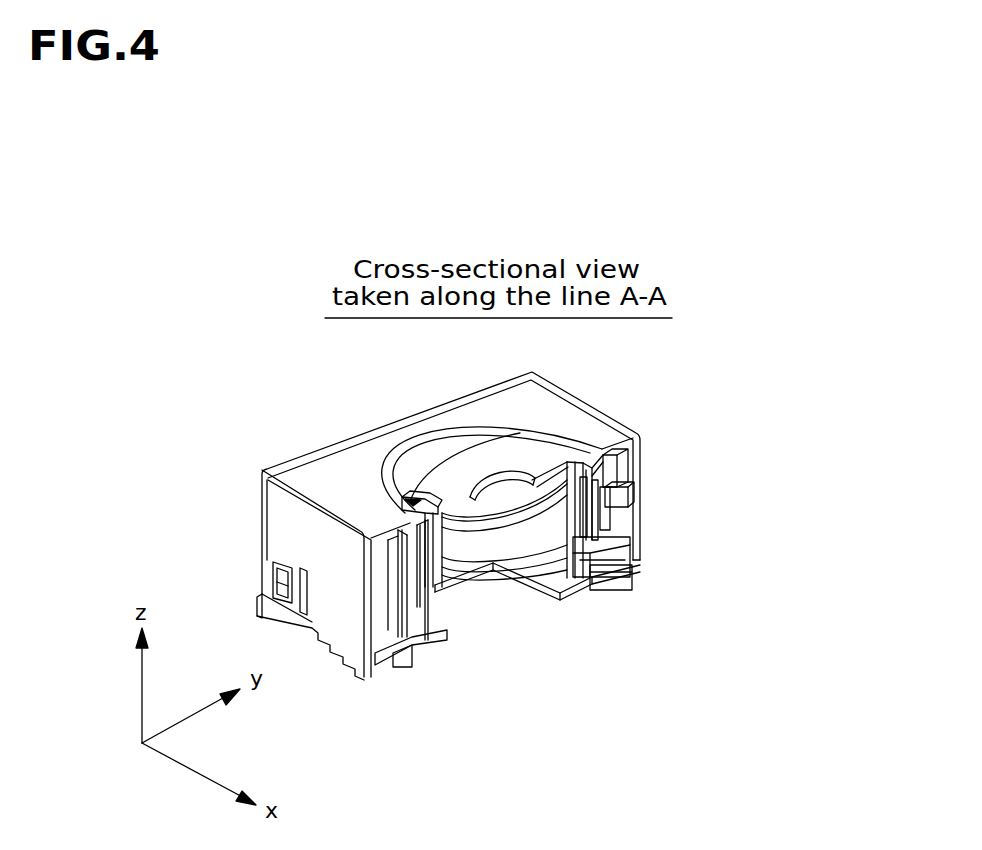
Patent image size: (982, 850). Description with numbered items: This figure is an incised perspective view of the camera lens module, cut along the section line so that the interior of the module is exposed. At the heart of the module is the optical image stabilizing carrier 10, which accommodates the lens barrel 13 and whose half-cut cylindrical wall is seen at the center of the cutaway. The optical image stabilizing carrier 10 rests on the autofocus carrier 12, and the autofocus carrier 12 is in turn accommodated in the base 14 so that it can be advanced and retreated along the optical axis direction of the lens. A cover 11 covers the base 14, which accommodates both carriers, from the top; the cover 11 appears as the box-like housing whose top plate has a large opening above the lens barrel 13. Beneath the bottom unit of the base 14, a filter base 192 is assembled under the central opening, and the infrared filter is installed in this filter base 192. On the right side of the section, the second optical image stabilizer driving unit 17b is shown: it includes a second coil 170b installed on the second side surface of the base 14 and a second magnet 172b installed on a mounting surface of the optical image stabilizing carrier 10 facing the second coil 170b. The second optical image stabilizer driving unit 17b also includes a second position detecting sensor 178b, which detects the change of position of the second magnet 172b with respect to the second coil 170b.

The optical image stabilizing carrier 10 is at (420, 562).
The cover 11 is at (308, 472).
The autofocus carrier 12 is at (632, 567).
The lens barrel 13 is at (440, 475).
The base 14 is at (378, 637).
The second optical image stabilizer driving unit 17b is at (755, 432).
The second coil 170b is at (625, 475).
The second magnet 172b is at (600, 523).
The second position detecting sensor 178b is at (627, 497).
The filter base 192 is at (620, 583).